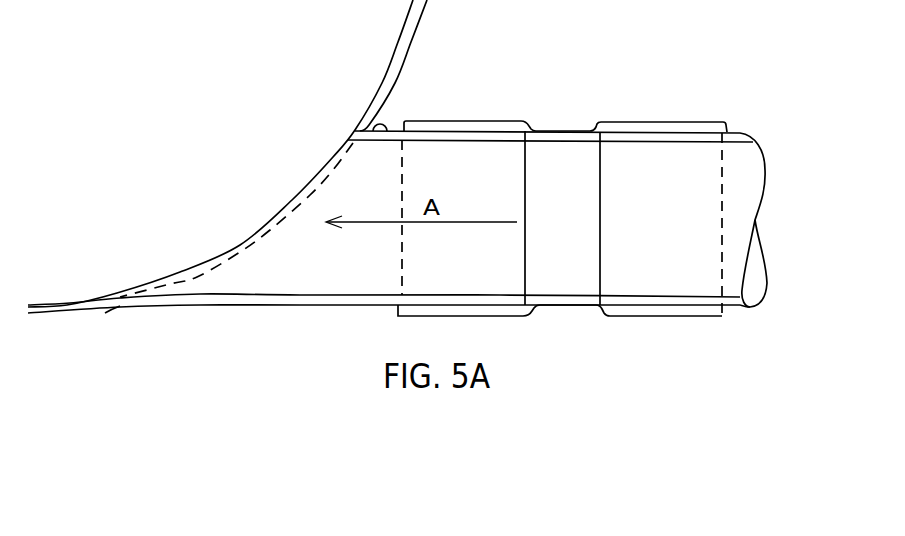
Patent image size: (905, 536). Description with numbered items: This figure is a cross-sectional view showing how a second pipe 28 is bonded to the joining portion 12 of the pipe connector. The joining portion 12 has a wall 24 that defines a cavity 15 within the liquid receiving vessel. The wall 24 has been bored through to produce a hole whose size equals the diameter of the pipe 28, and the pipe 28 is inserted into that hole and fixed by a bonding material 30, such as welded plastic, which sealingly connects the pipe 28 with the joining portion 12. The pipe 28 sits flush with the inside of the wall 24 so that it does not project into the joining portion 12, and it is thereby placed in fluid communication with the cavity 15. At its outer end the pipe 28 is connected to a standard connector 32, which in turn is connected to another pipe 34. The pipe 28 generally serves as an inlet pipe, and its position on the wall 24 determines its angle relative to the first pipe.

The joining portion 12 is at (382, 25).
The wall 24 is at (397, 67).
The cavity 15 is at (265, 153).
The bonding material 30 is at (382, 117).
The second pipe 28 is at (323, 307).
The standard connector 32 is at (570, 130).
The another pipe 34 is at (737, 127).